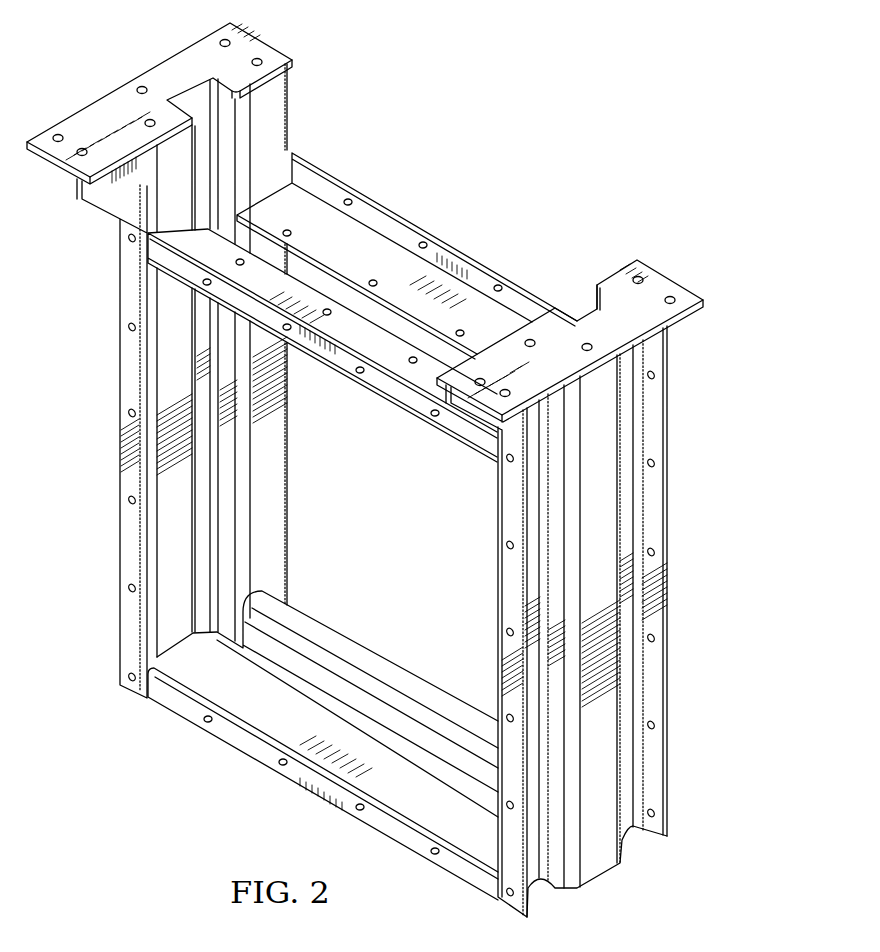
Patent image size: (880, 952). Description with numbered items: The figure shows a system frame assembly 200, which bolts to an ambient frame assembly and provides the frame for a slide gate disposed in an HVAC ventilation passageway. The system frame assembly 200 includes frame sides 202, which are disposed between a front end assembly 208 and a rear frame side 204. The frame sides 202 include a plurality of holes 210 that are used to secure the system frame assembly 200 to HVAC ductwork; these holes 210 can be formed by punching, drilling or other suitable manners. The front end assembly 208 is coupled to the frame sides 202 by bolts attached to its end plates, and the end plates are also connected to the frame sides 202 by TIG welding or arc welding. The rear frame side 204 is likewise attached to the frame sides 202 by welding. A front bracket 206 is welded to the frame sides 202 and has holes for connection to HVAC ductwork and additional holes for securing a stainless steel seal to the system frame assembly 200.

The system frame assembly 200 is at (369, 464).
The frame sides 202 is at (591, 602).
The rear frame side 204 is at (243, 742).
The front bracket 206 is at (393, 223).
The front end assembly 208 is at (665, 290).
The holes 210 is at (655, 551).